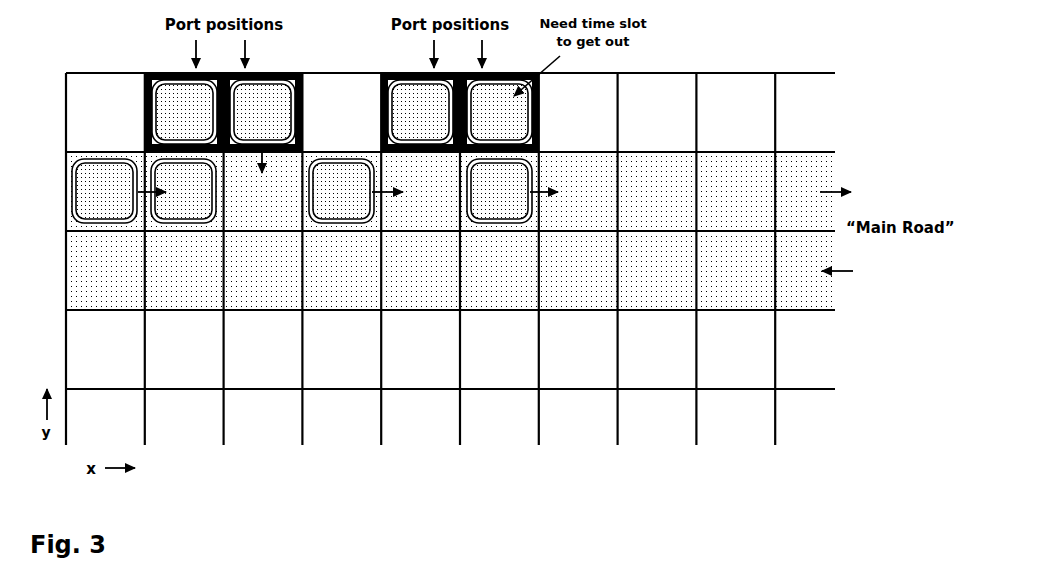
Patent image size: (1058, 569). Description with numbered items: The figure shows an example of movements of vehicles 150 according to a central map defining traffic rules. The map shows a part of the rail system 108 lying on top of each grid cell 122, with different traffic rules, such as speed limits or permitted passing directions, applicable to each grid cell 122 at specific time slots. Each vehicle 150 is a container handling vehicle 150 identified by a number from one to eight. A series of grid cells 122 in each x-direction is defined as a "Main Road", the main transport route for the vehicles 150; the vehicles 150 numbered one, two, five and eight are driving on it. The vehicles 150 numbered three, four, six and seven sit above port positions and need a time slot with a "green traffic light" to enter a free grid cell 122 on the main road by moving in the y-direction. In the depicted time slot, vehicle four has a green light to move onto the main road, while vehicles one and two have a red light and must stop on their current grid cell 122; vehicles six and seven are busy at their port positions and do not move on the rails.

The vehicle 150 is at (102, 155).
The grid cell 122 is at (679, 90).
The rail system 108 is at (788, 150).